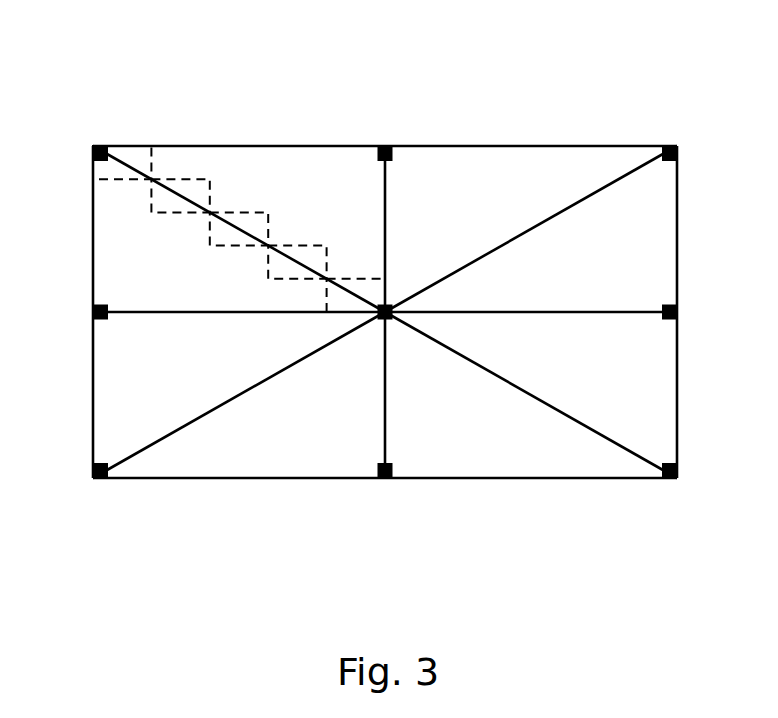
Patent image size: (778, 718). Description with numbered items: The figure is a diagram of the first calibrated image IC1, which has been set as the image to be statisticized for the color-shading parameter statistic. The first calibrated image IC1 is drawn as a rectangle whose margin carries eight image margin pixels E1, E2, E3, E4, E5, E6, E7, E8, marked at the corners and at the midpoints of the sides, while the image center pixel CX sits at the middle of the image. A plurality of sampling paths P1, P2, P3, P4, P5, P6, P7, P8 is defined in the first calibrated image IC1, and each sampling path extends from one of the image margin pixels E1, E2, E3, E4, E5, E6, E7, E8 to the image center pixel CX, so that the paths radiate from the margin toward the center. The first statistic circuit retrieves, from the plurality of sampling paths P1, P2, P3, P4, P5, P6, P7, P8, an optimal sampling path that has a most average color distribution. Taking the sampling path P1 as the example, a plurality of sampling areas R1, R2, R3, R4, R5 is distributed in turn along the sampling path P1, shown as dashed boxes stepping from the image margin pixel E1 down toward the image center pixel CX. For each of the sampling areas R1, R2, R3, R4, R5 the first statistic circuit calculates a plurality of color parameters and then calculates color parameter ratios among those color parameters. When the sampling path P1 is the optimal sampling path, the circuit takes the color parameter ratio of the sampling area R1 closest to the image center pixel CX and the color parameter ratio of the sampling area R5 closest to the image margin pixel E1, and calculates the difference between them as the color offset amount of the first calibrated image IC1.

The first calibrated image IC1 is at (656, 40).
The image margin pixel E1 is at (93, 146).
The image margin pixel E2 is at (93, 312).
The image margin pixel E3 is at (93, 478).
The image margin pixel E4 is at (388, 478).
The image margin pixel E5 is at (677, 478).
The image margin pixel E6 is at (677, 312).
The image margin pixel E7 is at (677, 146).
The image margin pixel E8 is at (385, 146).
The image center pixel CX is at (378, 318).
The sampling path P1 is at (228, 196).
The sampling path P2 is at (173, 303).
The sampling path P3 is at (202, 401).
The sampling path P4 is at (370, 419).
The sampling path P5 is at (556, 416).
The sampling path P6 is at (572, 319).
The sampling path P7 is at (524, 244).
The sampling path P8 is at (394, 224).
The sampling area R1 is at (367, 282).
The sampling area R2 is at (311, 250).
The sampling area R3 is at (254, 219).
The sampling area R4 is at (199, 186).
The sampling area R5 is at (134, 152).